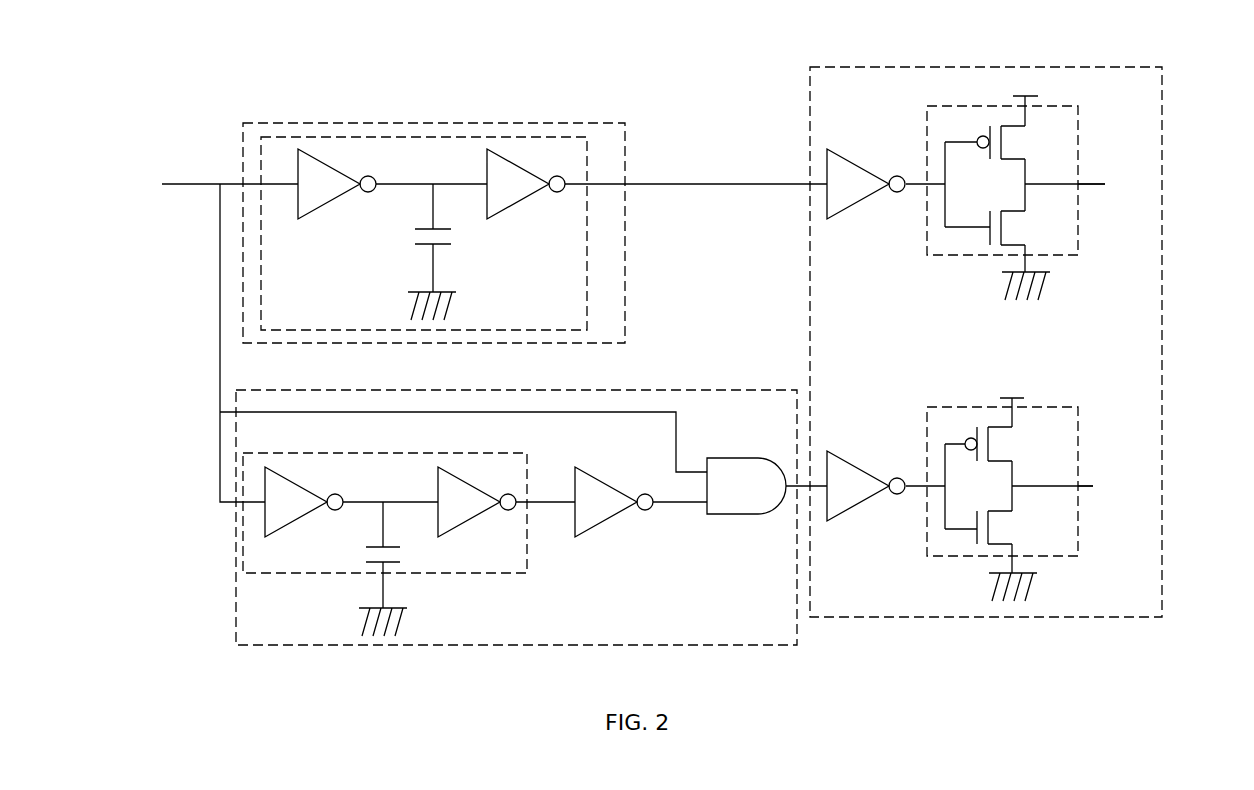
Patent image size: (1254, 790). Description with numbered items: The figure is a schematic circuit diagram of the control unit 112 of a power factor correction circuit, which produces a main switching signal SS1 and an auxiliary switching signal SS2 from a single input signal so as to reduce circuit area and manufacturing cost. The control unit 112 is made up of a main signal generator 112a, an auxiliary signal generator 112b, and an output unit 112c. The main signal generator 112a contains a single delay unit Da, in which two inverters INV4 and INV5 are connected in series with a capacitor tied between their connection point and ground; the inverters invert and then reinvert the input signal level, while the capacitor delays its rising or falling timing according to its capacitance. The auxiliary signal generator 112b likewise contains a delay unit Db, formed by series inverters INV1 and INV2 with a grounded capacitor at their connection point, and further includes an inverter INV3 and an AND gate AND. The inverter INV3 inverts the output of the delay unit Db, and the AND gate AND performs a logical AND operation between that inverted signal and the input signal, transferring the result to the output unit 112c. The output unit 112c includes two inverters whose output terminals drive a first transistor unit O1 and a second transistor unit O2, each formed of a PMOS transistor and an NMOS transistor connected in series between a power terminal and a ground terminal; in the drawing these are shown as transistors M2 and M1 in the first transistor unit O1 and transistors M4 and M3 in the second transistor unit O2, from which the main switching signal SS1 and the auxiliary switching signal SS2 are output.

The control unit 112 is at (675, 28).
The main signal generator 112a is at (625, 278).
The auxiliary signal generator 112b is at (680, 390).
The output unit 112c is at (1162, 357).
The delay unit Da is at (592, 317).
The delay unit Db is at (527, 573).
The first transistor unit O1 is at (1078, 142).
The second transistor unit O2 is at (1078, 448).
The inverter INV1 is at (302, 517).
The inverter INV2 is at (475, 517).
The inverter INV3 is at (612, 517).
The inverter INV4 is at (335, 199).
The inverter INV5 is at (524, 199).
The first NMOS transistor M1 is at (1002, 228).
The second PMOS transistor M2 is at (1018, 142).
The third NMOS transistor M3 is at (1002, 527).
The fourth PMOS transistor M4 is at (1012, 444).
The AND gate AND is at (746, 470).
The main switching signal SS1 is at (1116, 184).
The auxiliary switching signal SS2 is at (1111, 487).